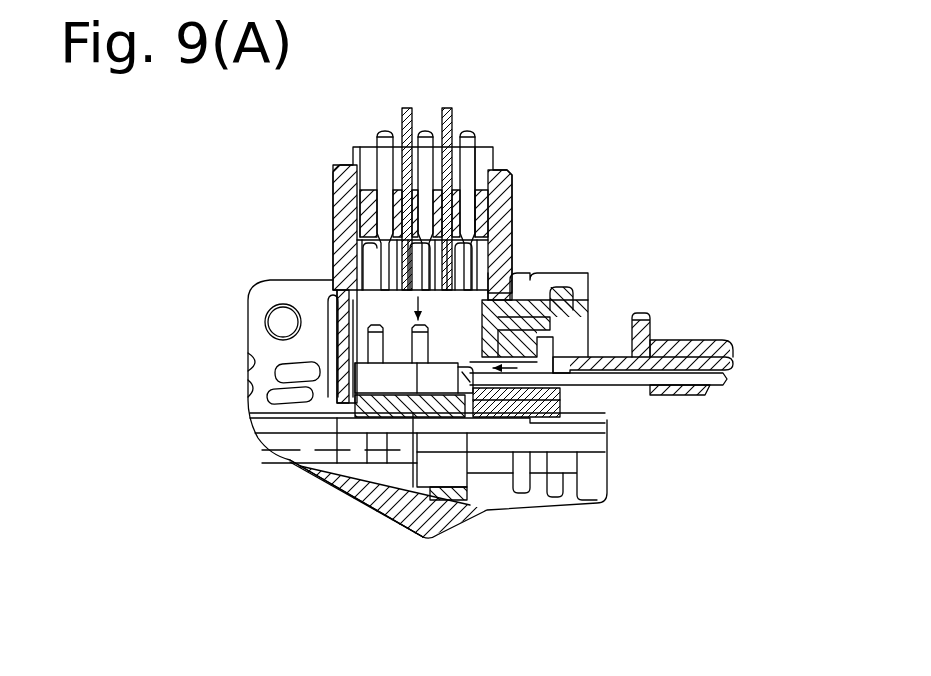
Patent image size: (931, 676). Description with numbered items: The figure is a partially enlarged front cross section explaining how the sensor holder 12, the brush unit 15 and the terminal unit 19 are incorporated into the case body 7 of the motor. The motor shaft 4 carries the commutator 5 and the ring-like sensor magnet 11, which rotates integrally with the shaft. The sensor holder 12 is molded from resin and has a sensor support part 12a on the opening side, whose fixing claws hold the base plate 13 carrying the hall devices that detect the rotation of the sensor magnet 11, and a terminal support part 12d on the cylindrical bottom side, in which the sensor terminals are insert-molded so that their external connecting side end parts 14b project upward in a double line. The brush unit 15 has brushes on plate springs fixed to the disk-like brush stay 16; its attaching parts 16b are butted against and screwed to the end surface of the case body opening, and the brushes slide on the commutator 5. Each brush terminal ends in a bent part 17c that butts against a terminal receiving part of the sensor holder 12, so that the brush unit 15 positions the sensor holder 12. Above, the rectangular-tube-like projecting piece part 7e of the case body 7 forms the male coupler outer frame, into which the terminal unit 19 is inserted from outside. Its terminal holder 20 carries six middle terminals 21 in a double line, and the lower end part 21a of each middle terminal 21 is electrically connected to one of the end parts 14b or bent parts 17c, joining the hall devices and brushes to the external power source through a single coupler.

The motor shaft 4 is at (490, 456).
The commutator 5 is at (592, 472).
The case body 7 is at (262, 300).
The projecting piece part 7e is at (500, 240).
The sensor magnet 11 is at (540, 483).
The sensor holder 12 is at (383, 380).
The sensor support part 12a is at (560, 395).
The terminal support part 12d is at (378, 383).
The base plate 13 is at (530, 433).
The external connecting side end parts 14b is at (412, 326).
The brush unit 15 is at (735, 370).
The brush stay 16 is at (703, 360).
The attaching parts 16b is at (650, 312).
The bent part 17c is at (543, 352).
The terminal unit 19 is at (388, 108).
The terminal holder 20 is at (510, 183).
The middle terminals 21 is at (468, 130).
The lower end part 21a is at (457, 278).